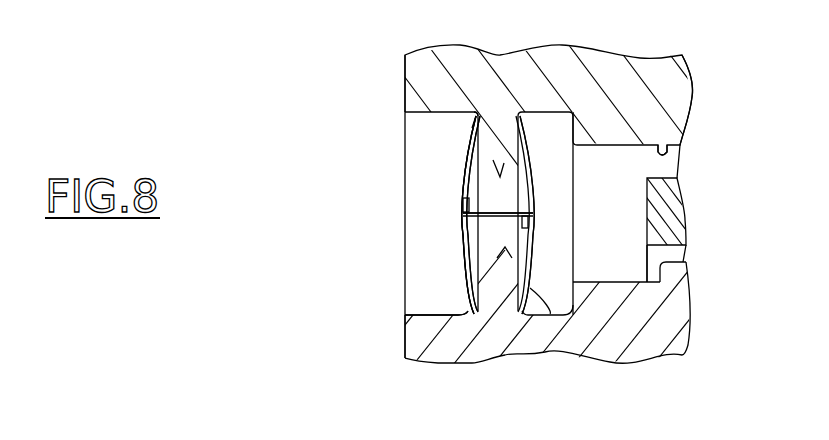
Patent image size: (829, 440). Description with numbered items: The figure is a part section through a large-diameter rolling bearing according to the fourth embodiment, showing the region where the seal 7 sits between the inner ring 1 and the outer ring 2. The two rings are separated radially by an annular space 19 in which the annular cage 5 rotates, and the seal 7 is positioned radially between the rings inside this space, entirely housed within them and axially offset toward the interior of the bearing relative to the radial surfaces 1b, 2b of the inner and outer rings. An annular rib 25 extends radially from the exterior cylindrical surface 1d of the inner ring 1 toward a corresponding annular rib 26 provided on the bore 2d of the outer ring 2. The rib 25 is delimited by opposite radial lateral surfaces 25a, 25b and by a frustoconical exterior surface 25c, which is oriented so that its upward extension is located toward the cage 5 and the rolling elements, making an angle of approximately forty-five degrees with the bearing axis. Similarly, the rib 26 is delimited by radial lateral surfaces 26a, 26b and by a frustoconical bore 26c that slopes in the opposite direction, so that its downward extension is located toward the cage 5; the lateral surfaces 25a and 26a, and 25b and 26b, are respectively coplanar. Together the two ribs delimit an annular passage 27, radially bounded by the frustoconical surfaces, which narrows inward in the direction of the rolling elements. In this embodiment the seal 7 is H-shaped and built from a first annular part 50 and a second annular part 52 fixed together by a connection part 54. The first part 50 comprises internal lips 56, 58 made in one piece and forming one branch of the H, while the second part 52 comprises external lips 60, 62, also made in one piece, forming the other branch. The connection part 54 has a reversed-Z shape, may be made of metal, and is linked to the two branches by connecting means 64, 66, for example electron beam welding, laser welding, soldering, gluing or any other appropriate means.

The inner ring 1 is at (668, 300).
The radial surface of the inner ring 1b is at (495, 290).
The exterior cylindrical surface of the inner ring 1d is at (686, 262).
The outer ring 2 is at (681, 113).
The radial surface of the outer ring 2b is at (405, 62).
The bore of the outer ring 2d is at (664, 153).
The annular cage 5 is at (657, 222).
The annular seal 7 is at (447, 170).
The annular space 19 is at (628, 173).
The annular rib of the inner ring 25 is at (492, 292).
The radial lateral surface of the rib 25a is at (533, 288).
The radial lateral surface of the rib 25b is at (465, 298).
The frustoconical exterior surface 25c is at (505, 258).
The annular rib of the outer ring 26 is at (497, 140).
The radial lateral surface of the rib 26a is at (521, 150).
The radial lateral surface of the rib 26b is at (500, 172).
The frustoconical bore 26c is at (507, 168).
The annular passage 27 is at (488, 238).
The first annular part 50 is at (681, 113).
The second annular part 52 is at (450, 188).
The connection part 54 is at (541, 188).
The internal lip 56 is at (506, 202).
The internal lip 58 is at (560, 298).
The external lip 60 is at (472, 124).
The external lip 62 is at (470, 280).
The connecting means 64 is at (660, 205).
The connecting means 66 is at (487, 217).